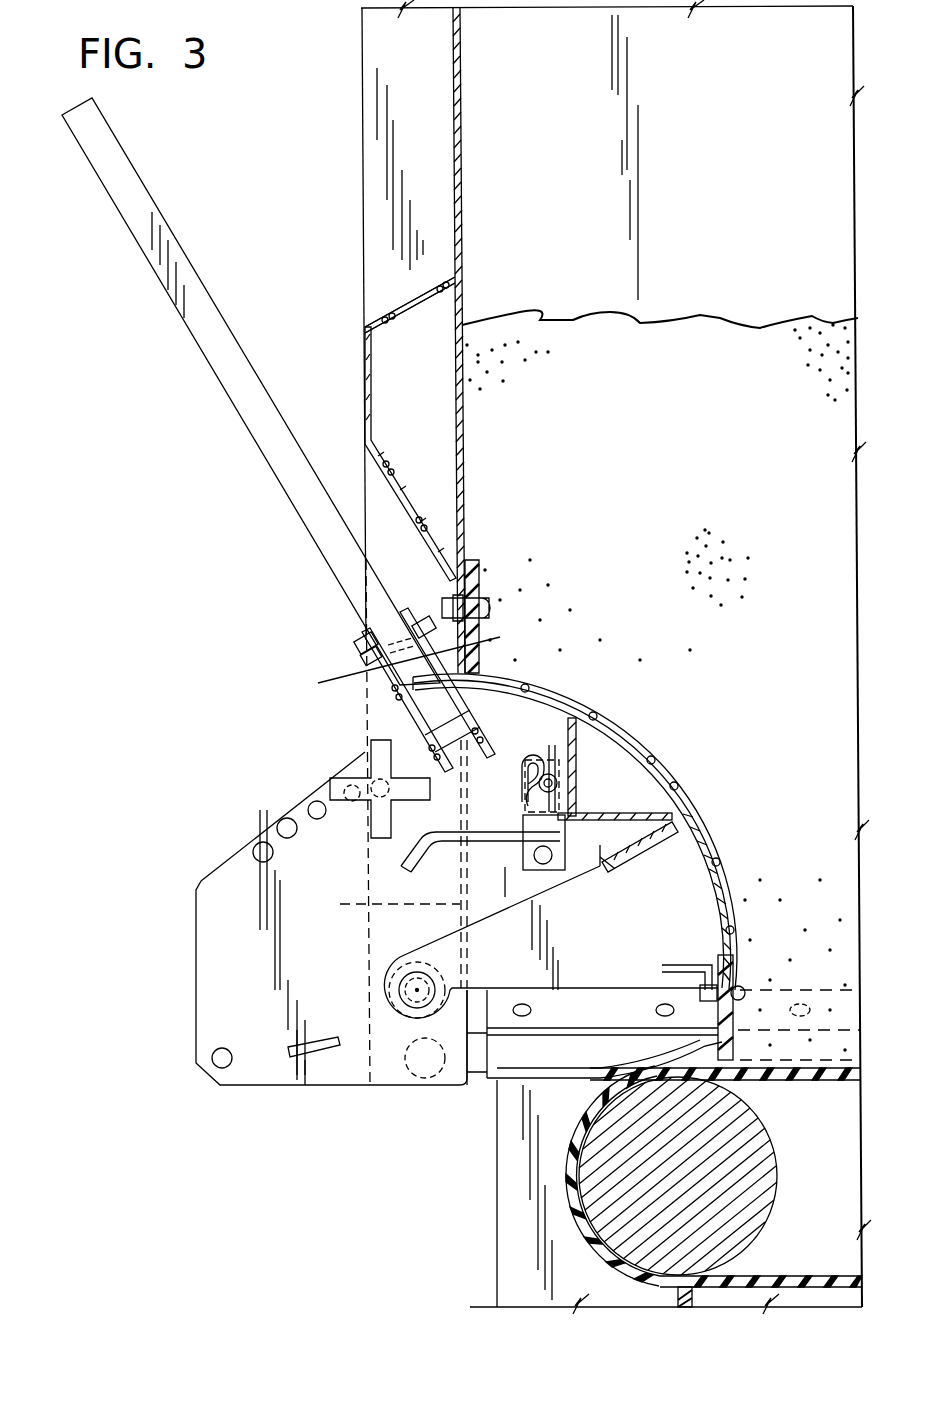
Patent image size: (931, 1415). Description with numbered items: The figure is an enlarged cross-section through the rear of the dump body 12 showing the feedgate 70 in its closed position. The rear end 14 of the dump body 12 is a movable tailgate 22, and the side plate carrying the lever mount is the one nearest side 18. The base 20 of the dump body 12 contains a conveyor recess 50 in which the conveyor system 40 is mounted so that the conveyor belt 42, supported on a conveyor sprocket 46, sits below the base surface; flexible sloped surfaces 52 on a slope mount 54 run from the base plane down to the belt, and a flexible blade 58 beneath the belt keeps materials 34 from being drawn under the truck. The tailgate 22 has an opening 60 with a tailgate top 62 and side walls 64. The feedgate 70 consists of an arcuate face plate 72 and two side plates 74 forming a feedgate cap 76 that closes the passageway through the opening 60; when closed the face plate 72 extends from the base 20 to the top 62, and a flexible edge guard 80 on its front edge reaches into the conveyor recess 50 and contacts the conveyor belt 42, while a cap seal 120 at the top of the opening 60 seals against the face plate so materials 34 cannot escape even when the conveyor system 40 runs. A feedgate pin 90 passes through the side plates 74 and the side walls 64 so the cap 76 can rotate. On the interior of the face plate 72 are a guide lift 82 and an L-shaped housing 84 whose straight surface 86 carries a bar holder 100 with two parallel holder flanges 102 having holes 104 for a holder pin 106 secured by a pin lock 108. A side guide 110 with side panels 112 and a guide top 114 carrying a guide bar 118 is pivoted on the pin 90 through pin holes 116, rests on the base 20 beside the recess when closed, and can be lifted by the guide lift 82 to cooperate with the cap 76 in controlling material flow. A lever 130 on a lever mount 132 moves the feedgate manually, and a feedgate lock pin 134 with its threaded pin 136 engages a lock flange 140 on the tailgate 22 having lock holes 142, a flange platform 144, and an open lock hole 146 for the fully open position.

The dump body 12 is at (500, 68).
The rear end 14 is at (362, 120).
The side 18 is at (706, 160).
The base 20 is at (802, 990).
The tailgate 22 is at (357, 208).
The materials 34 is at (700, 337).
The conveyor system 40 is at (563, 1200).
The conveyor belt 42 is at (800, 1082).
The conveyor sprocket 46 is at (769, 1210).
The conveyor recess 50 is at (513, 1160).
The sloped surface 52 is at (520, 1060).
The slope mount 54 is at (562, 1005).
The blade 58 is at (680, 1292).
The opening 60 is at (455, 650).
The tailgate top 62 is at (340, 677).
The side 64 is at (380, 904).
The feedgate 70 is at (605, 719).
The face plate 72 is at (656, 777).
The side plate 74 is at (402, 930).
The feedgate cap 76 is at (644, 756).
The edge guard 80 is at (720, 1040).
The guide lift 82 is at (680, 965).
The housing 84 is at (630, 807).
The straight surface 86 is at (576, 762).
The feedgate pin 90 is at (413, 1008).
The bar holder 100 is at (552, 730).
The holder flange 102 is at (583, 720).
The hole 104 is at (558, 782).
The holder pin 106 is at (540, 784).
The pin lock 108 is at (523, 742).
The side guide 110 is at (689, 867).
The side panel 112 is at (675, 905).
The guide top 114 is at (672, 818).
The pin hole 116 is at (417, 990).
The guide bar 118 is at (410, 857).
The cap seal 120 is at (477, 670).
The lever 130 is at (225, 388).
The lever mount 132 is at (470, 655).
The feedgate lock pin 134 is at (326, 789).
The pin 136 is at (365, 770).
The lock flange 140 is at (207, 960).
The lock hole 142 is at (268, 816).
The flange platform 144 is at (297, 1057).
The open lock hole 146 is at (218, 1066).